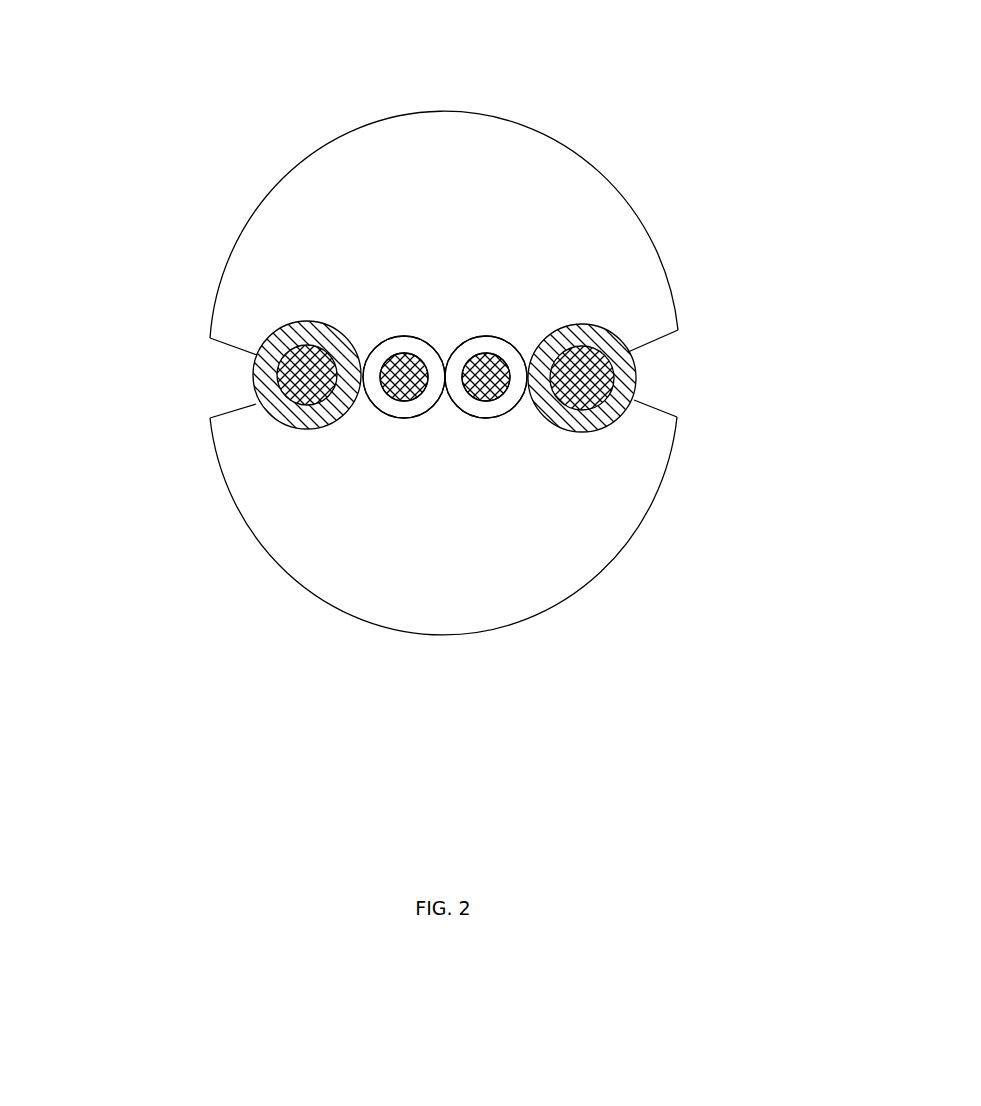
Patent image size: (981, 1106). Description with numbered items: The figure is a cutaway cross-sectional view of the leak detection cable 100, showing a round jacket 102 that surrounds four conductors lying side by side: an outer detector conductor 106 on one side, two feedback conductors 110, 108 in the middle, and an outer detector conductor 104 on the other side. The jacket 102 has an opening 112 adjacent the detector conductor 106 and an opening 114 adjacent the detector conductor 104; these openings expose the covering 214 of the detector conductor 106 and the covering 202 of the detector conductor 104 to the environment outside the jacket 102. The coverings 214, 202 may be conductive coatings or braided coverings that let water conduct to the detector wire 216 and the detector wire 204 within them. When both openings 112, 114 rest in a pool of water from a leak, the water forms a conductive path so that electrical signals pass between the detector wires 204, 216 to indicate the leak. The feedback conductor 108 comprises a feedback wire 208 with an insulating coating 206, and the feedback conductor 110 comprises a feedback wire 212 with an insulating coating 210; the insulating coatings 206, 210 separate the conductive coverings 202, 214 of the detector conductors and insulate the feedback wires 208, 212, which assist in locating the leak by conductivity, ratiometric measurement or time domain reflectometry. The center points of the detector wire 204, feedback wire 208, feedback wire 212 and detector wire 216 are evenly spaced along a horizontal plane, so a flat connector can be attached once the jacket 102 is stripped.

The leak detection cable 100 is at (226, 88).
The jacket 102 is at (475, 128).
The detector conductor 104 is at (602, 306).
The detector conductor 106 is at (302, 305).
The feedback conductor 108 is at (491, 316).
The feedback conductor 110 is at (394, 318).
The opening 112 is at (204, 399).
The opening 114 is at (682, 367).
The covering 202 is at (632, 400).
The detector wire 204 is at (587, 392).
The insulating coating 206 is at (485, 418).
The feedback wire 208 is at (467, 387).
The insulating coating 210 is at (405, 418).
The feedback wire 212 is at (388, 387).
The covering 214 is at (275, 330).
The detector wire 216 is at (297, 368).